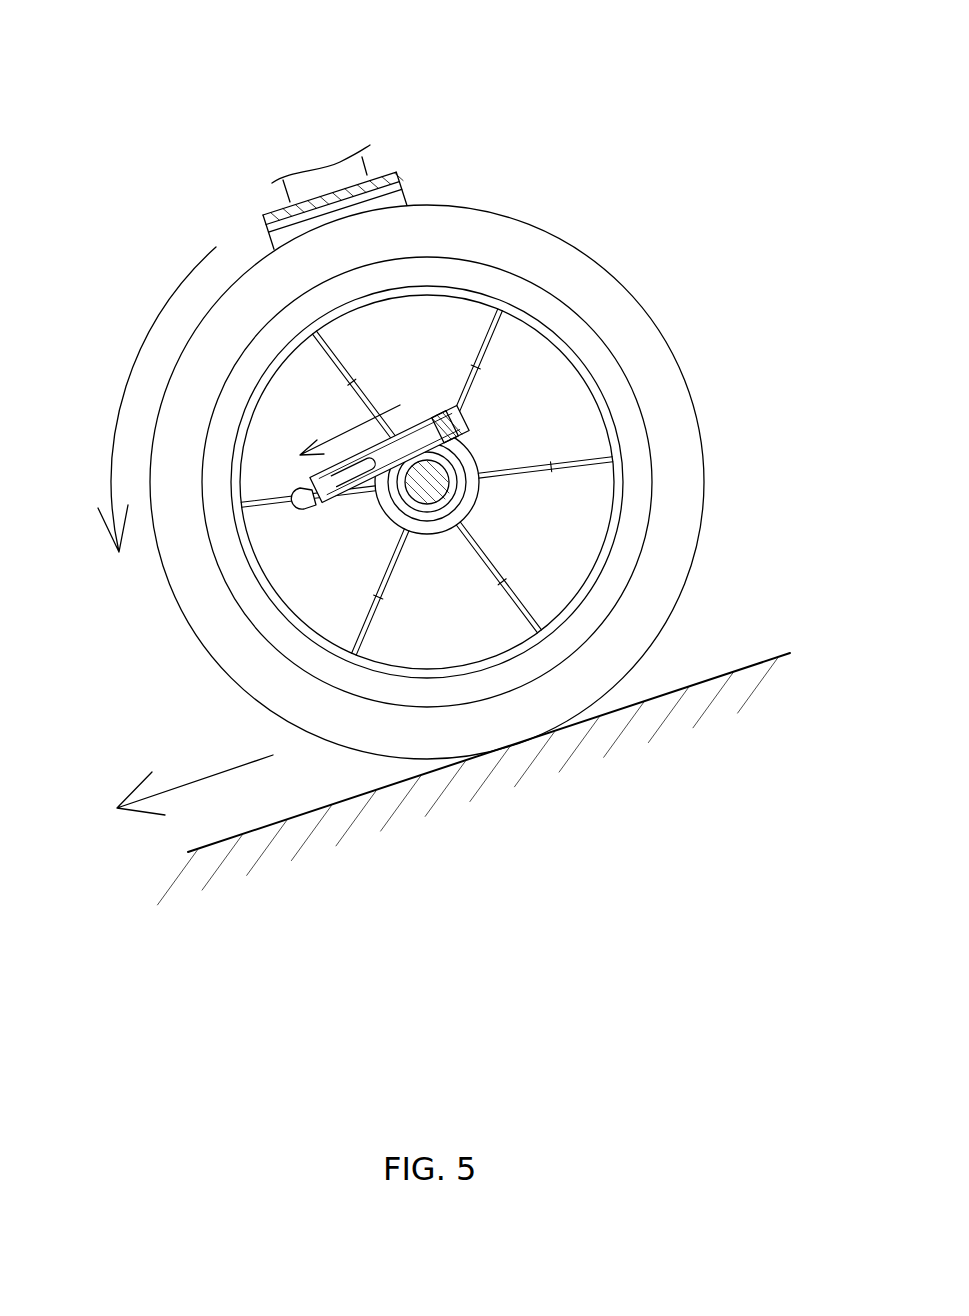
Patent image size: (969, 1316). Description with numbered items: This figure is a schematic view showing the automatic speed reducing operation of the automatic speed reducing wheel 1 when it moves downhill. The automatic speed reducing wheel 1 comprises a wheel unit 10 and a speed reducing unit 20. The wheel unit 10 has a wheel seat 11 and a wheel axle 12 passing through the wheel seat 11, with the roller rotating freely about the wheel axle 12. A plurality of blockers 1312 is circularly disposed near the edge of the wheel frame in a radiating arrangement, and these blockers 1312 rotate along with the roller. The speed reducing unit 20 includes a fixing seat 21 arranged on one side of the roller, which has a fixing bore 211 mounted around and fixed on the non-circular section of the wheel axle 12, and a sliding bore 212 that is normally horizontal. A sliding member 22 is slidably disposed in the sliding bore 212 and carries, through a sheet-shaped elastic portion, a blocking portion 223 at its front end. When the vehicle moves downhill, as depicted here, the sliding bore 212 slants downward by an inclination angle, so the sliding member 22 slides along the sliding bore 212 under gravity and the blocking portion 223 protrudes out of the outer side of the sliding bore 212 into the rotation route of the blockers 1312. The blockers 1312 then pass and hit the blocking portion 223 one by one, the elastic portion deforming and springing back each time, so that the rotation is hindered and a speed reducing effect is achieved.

The automatic speed reducing wheel 1 is at (702, 150).
The wheel unit 10 is at (682, 370).
The wheel seat 11 is at (388, 172).
The wheel axle 12 is at (440, 484).
The speed reducing unit 20 is at (430, 447).
The fixing seat 21 is at (445, 400).
The fixing bore 211 is at (457, 468).
The sliding bore 212 is at (417, 437).
The sliding member 22 is at (313, 480).
The blocking portion 223 is at (300, 512).
The blockers 1312 is at (272, 507).